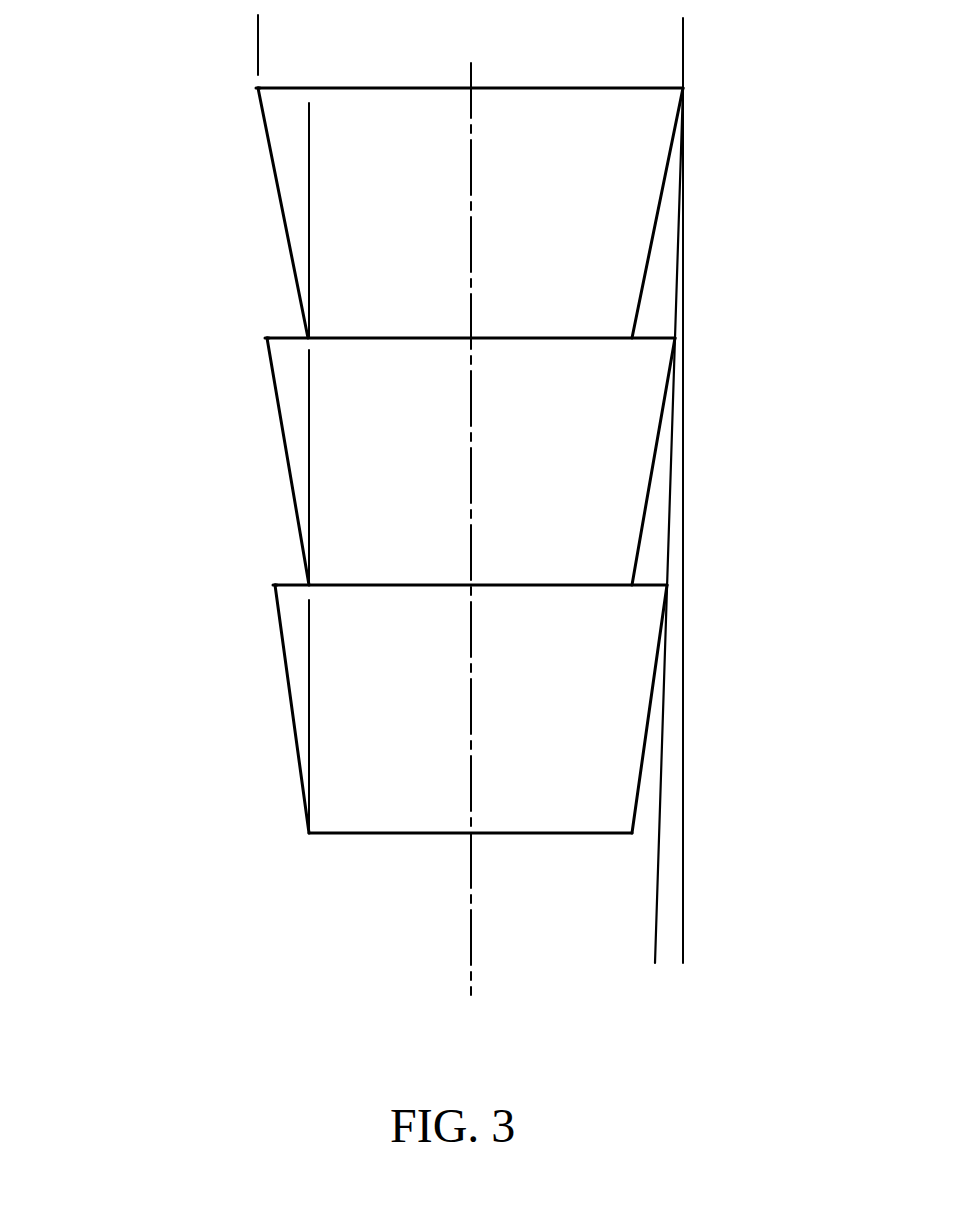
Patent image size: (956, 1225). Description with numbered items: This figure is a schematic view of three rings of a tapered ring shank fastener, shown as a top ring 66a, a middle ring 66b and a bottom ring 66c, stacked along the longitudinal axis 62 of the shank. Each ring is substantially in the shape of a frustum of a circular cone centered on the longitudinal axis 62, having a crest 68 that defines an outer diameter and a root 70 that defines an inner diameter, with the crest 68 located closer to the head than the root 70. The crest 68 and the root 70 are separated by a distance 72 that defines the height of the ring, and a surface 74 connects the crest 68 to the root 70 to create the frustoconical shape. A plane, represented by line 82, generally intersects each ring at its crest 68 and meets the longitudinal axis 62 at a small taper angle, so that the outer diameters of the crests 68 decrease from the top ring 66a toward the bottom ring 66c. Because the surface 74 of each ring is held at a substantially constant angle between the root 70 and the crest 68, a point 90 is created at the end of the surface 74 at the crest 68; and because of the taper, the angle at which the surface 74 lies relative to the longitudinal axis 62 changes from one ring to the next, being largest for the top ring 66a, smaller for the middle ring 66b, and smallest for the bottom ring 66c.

The longitudinal axis 62 is at (471, 979).
The top ring 66a is at (240, 206).
The middle ring 66b is at (243, 458).
The bottom ring 66c is at (254, 717).
The crest 68 is at (683, 40).
The root 70 is at (632, 845).
The distance 72 is at (775, 88).
The surface 74 is at (289, 249).
The line 82 is at (655, 946).
The point 90 is at (258, 88).